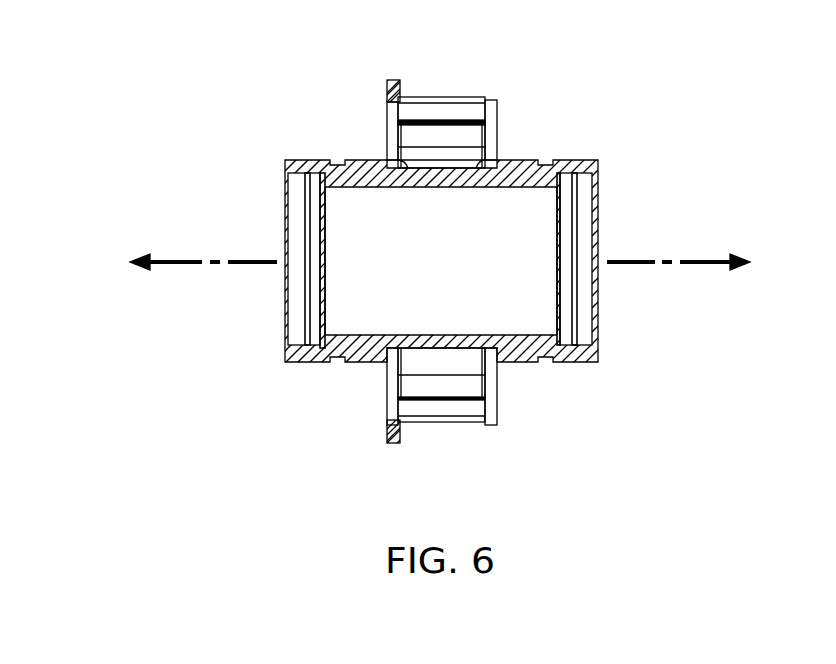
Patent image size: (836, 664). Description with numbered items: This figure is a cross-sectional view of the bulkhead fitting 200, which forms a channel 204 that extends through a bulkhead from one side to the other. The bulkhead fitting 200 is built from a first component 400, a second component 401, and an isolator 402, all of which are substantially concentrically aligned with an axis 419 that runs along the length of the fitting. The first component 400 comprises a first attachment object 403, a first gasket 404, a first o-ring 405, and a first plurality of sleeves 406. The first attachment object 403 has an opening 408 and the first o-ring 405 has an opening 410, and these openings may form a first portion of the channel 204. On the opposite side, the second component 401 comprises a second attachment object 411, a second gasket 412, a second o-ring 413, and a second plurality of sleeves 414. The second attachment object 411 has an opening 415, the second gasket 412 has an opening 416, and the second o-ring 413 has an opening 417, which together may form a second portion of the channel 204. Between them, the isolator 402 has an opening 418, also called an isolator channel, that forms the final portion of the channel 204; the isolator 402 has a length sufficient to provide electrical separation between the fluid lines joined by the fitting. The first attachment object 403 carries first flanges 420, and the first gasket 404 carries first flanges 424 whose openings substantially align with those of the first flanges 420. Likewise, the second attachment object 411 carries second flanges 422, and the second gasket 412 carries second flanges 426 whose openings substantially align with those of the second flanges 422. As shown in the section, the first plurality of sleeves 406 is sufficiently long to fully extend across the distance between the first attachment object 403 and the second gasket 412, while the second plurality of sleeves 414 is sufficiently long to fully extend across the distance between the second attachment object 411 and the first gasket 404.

The bulkhead fitting 200 is at (418, 263).
The channel 204 is at (350, 313).
The first component 400 is at (307, 376).
The second component 401 is at (575, 376).
The isolator 402 is at (462, 276).
The first attachment object 403 is at (293, 160).
The first gasket 404 is at (397, 78).
The first o-ring 405 is at (305, 178).
The first plurality of sleeves 406 is at (432, 94).
The opening 408 is at (302, 288).
The opening 410 is at (336, 226).
The second attachment object 411 is at (590, 160).
The second gasket 412 is at (507, 183).
The second o-ring 413 is at (562, 178).
The second plurality of sleeves 414 is at (462, 120).
The opening 415 is at (584, 287).
The opening 416 is at (475, 162).
The opening 417 is at (566, 250).
The opening 418 is at (312, 237).
The axis 419 is at (708, 258).
The first flanges 420 is at (384, 81).
The second flanges 422 is at (493, 96).
The first flanges 424 is at (398, 448).
The second flanges 426 is at (487, 380).